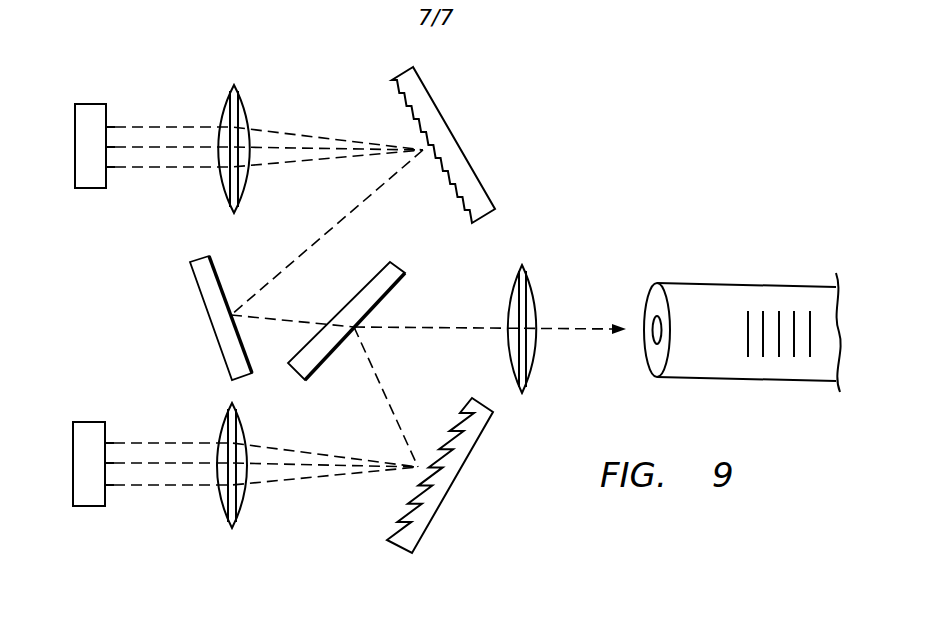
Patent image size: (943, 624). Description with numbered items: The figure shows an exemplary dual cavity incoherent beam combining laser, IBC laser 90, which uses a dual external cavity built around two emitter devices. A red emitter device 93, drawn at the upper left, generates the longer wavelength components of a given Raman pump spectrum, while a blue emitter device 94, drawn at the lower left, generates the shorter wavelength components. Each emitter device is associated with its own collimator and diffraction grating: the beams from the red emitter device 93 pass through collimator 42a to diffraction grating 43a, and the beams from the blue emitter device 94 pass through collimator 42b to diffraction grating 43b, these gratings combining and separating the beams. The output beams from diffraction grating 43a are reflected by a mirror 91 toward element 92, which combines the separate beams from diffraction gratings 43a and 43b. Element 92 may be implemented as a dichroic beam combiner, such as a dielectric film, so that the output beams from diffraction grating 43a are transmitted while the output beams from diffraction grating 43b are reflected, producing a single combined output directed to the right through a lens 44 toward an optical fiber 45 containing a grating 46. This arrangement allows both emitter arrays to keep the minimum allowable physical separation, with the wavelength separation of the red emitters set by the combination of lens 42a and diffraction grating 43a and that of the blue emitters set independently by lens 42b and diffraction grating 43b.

The red emitter device 93 is at (88, 104).
The collimator 42a is at (234, 85).
The diffraction grating 43a is at (457, 140).
The IBC laser 90 is at (655, 140).
The mirror 91 is at (208, 323).
The dichroic beam combiner 92 is at (395, 262).
The focusing lens 44 is at (522, 265).
The optical fiber 45 is at (745, 286).
The fiber Bragg grating 46 is at (748, 333).
The diffraction grating 43b is at (454, 485).
The blue emitter device 94 is at (88, 506).
The collimator 42b is at (232, 528).